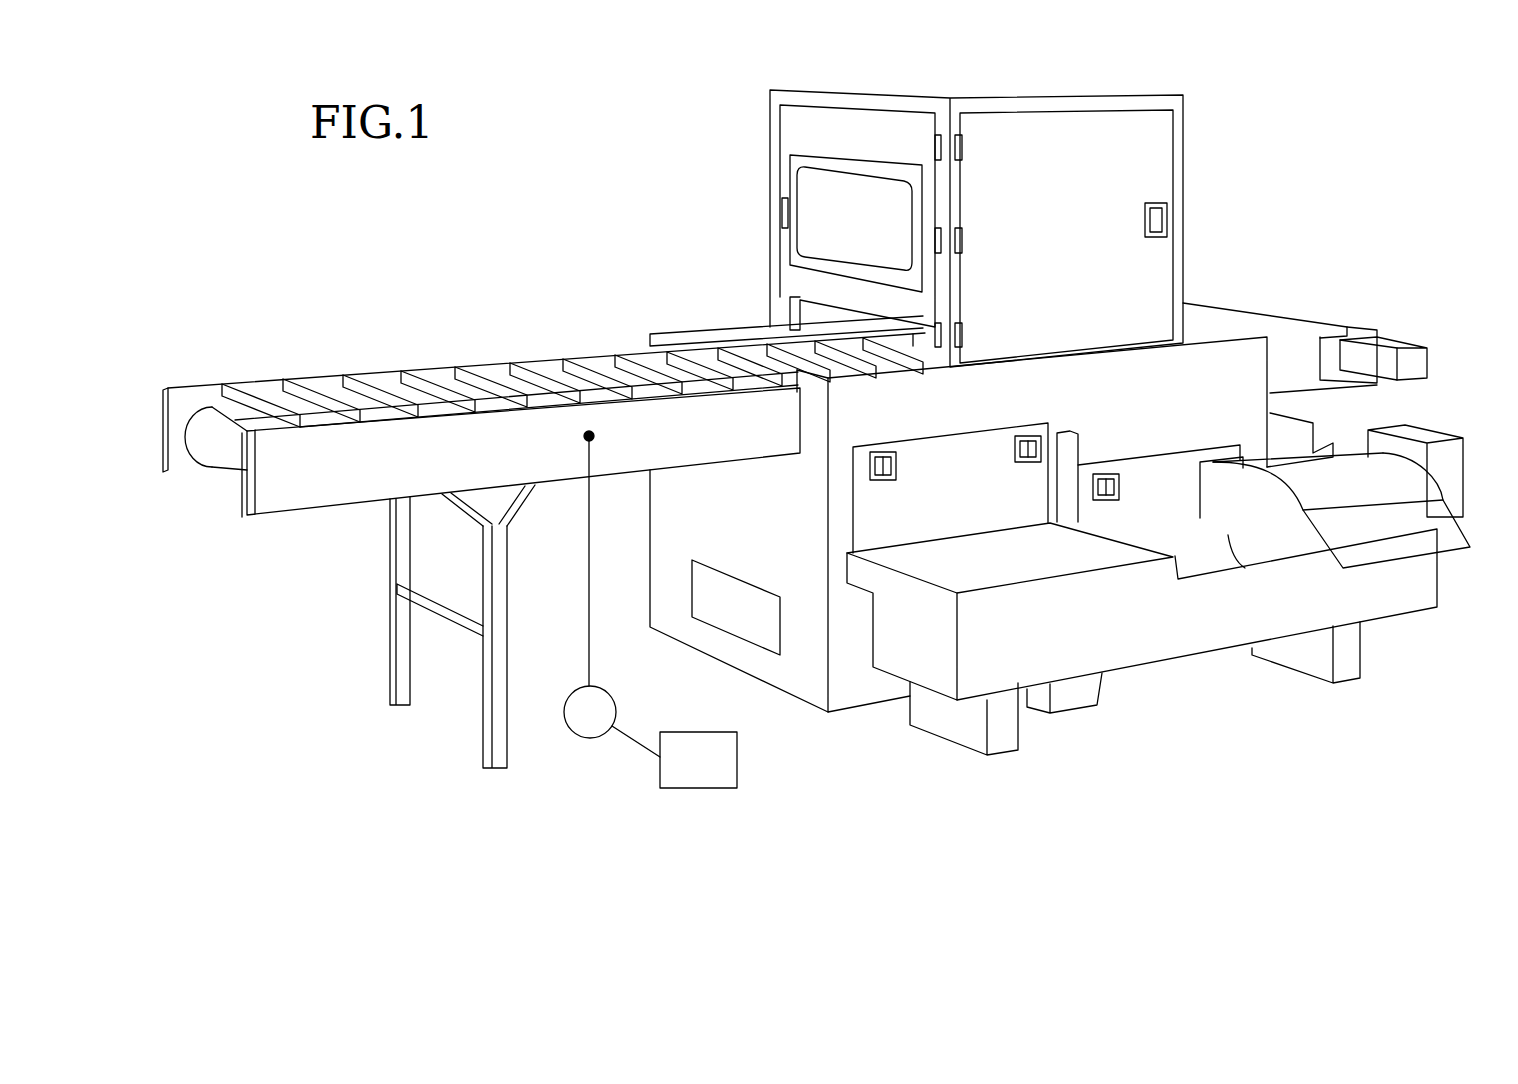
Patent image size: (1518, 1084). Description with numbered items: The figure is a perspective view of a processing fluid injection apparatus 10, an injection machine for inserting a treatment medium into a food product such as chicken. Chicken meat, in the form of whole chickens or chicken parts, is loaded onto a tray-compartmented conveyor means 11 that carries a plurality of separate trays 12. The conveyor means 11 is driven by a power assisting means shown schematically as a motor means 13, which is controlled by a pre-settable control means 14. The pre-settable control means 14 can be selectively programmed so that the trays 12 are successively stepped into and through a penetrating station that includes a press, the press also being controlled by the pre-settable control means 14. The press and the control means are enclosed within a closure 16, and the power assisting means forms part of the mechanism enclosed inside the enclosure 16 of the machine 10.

The processing fluid injection apparatus 10 is at (652, 256).
The conveyor means 11 is at (244, 384).
The trays 12 is at (343, 403).
The motor means 13 is at (584, 717).
The pre-settable control means 14 is at (718, 762).
The closure 16 is at (1199, 190).